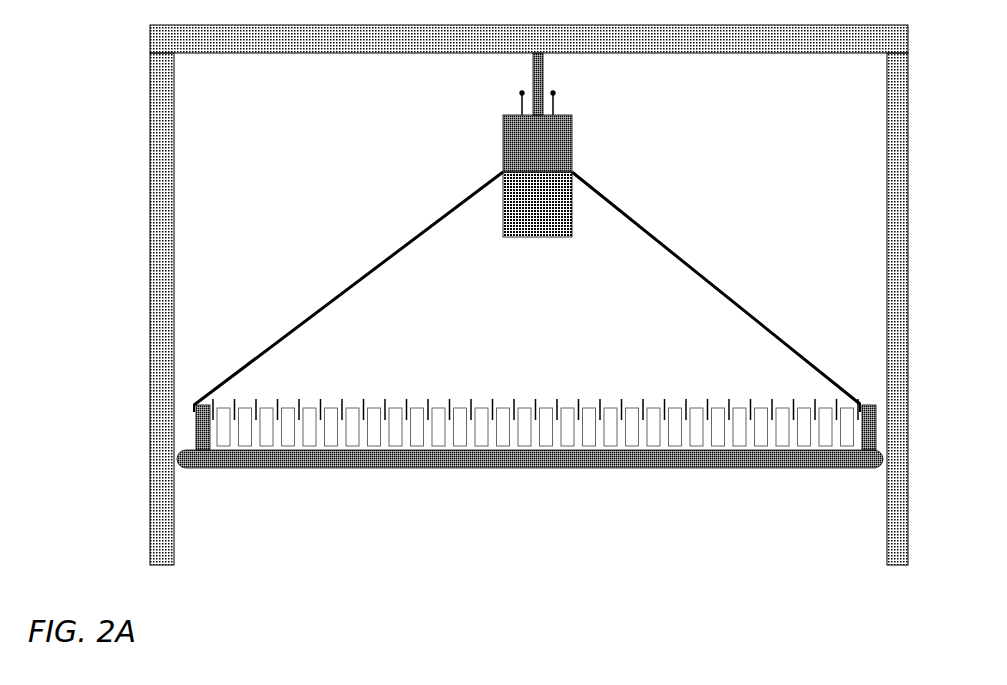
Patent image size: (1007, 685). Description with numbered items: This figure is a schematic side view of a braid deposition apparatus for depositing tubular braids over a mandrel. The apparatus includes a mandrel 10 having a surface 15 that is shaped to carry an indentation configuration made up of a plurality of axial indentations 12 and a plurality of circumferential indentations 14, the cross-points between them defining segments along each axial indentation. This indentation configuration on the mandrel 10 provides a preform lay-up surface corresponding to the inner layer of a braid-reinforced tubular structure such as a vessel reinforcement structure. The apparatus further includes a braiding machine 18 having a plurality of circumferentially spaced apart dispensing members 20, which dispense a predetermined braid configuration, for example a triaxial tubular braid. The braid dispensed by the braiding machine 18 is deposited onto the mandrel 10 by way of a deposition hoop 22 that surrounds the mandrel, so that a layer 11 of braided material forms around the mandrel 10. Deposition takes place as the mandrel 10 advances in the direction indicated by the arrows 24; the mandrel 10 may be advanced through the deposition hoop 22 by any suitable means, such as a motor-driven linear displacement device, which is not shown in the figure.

The mandrel 10 is at (541, 188).
The layer of braided material 11 is at (572, 148).
The axial indentations 12 is at (525, 238).
The circumferential indentations 14 is at (572, 213).
The surface 15 is at (505, 197).
The braiding machine 18 is at (701, 388).
The dispensing members 20 is at (218, 412).
The deposition hoop 22 is at (502, 171).
The arrows 24 is at (557, 105).